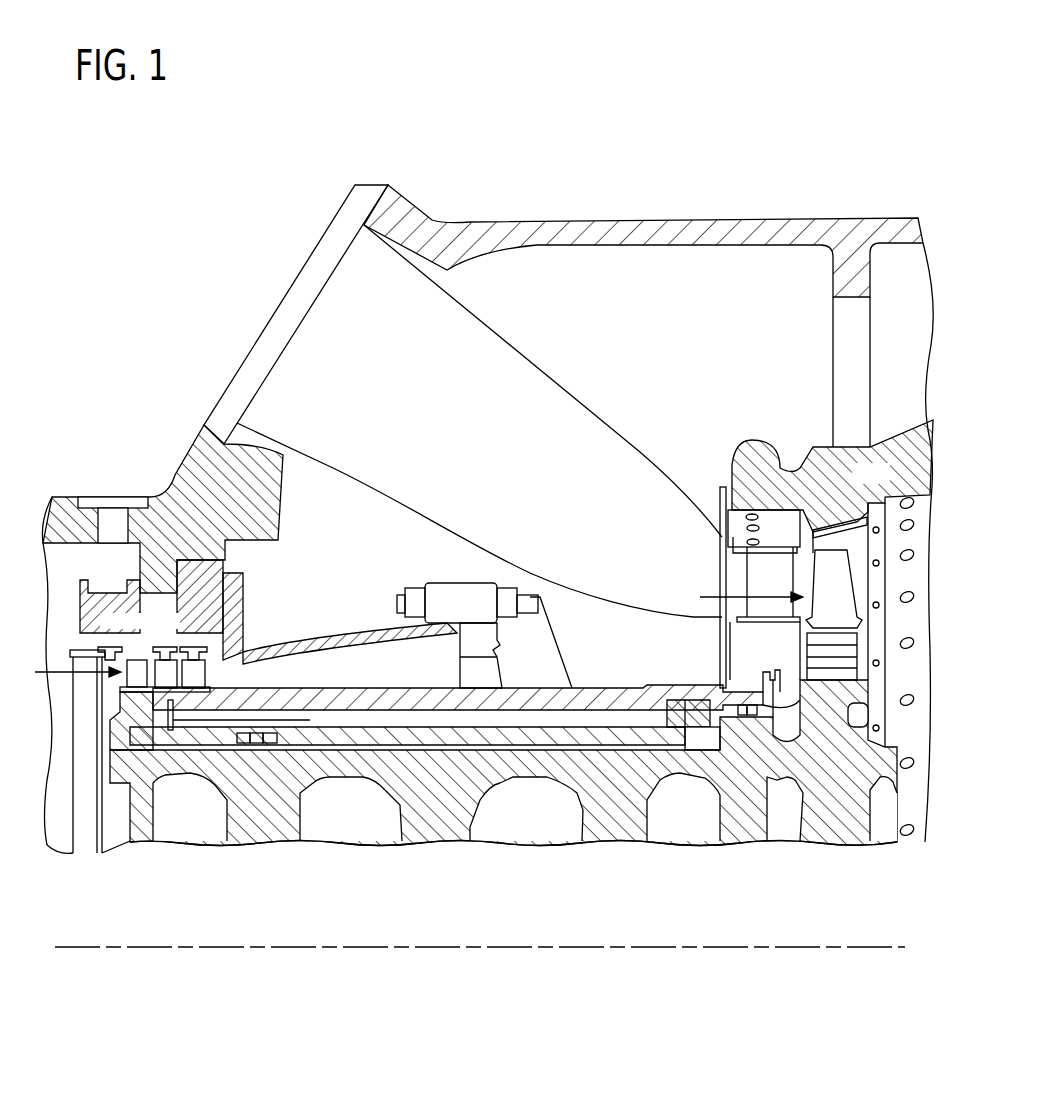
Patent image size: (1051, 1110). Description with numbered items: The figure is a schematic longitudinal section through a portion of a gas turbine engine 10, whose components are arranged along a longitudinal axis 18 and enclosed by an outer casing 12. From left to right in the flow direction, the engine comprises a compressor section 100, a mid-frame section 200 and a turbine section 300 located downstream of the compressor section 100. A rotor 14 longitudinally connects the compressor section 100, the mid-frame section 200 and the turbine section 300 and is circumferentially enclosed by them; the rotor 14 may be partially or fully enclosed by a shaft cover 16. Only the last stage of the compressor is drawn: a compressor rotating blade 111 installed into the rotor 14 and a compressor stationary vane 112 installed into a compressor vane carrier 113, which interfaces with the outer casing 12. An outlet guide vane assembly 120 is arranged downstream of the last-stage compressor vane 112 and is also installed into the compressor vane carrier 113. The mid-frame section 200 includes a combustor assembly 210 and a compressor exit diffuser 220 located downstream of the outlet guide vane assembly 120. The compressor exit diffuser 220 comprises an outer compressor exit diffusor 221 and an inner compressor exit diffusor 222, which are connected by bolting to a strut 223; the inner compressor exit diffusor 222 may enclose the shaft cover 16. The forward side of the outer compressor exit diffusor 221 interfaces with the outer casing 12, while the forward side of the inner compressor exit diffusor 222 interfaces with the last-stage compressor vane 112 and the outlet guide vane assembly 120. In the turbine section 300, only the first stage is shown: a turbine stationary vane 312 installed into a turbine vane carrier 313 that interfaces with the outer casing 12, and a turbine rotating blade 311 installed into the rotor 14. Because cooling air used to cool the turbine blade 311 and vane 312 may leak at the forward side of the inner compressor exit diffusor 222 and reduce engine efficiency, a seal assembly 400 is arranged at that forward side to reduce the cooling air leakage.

The gas turbine engine 10 is at (474, 502).
The outer casing 12 is at (703, 218).
The rotor 14 is at (438, 818).
The shaft cover 16 is at (525, 737).
The longitudinal axis 18 is at (450, 947).
The compressor section 100 is at (177, 631).
The compressor rotating blade 111 is at (142, 677).
The compressor stationary vane 112 is at (163, 677).
The compressor vane carrier 113 is at (77, 610).
The outlet guide vane assembly 120 is at (197, 645).
The mid-frame section 200 is at (476, 462).
The combustor assembly 210 is at (492, 453).
The compressor exit diffuser 220 is at (476, 697).
The outer compressor exit diffusor 221 is at (363, 627).
The inner compressor exit diffusor 222 is at (353, 703).
The strut 223 is at (527, 648).
The turbine section 300 is at (521, 653).
The turbine rotating blade 311 is at (833, 553).
The turbine stationary vane 312 is at (763, 578).
The turbine vane carrier 313 is at (759, 448).
The seal assembly 400 is at (210, 683).